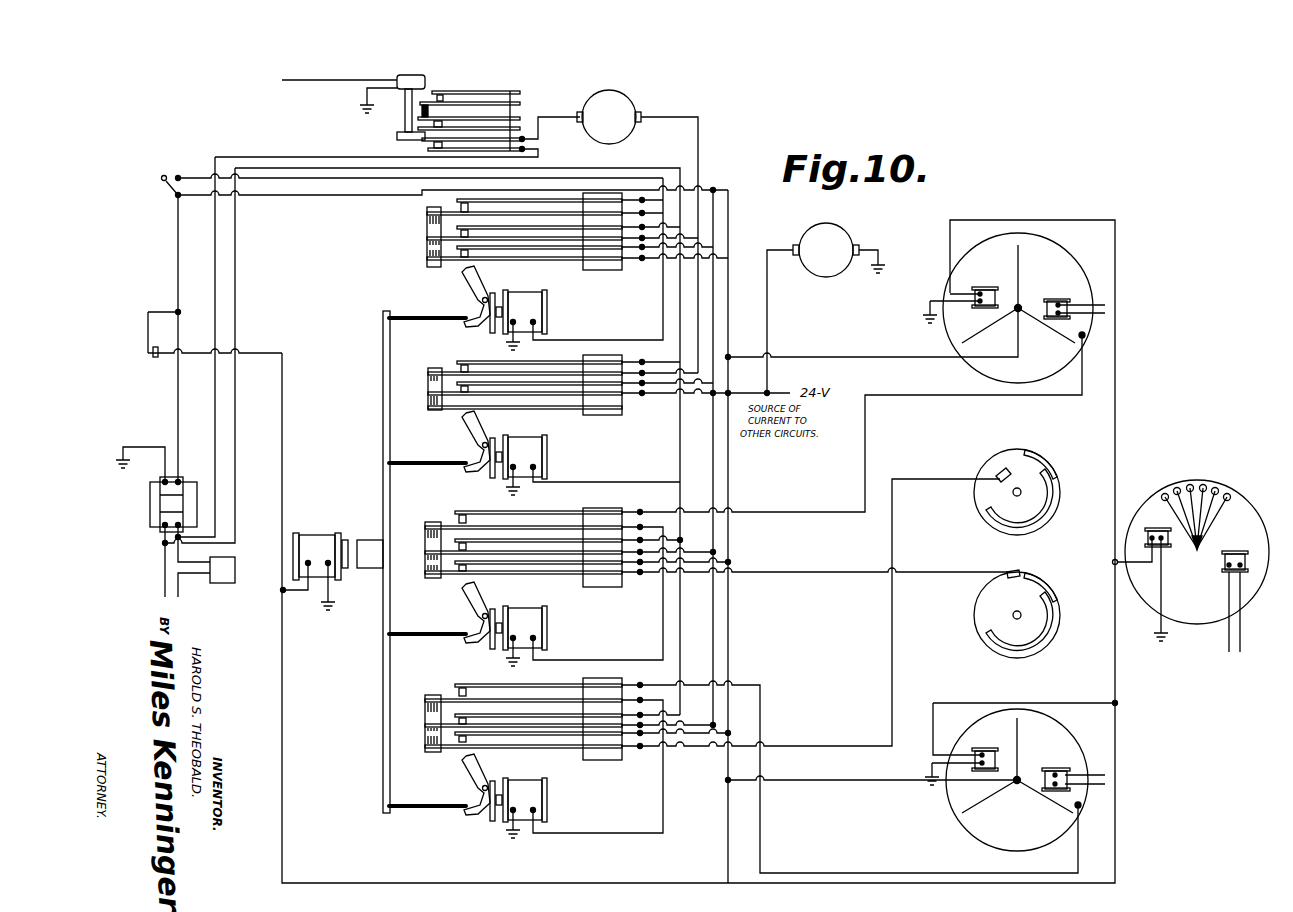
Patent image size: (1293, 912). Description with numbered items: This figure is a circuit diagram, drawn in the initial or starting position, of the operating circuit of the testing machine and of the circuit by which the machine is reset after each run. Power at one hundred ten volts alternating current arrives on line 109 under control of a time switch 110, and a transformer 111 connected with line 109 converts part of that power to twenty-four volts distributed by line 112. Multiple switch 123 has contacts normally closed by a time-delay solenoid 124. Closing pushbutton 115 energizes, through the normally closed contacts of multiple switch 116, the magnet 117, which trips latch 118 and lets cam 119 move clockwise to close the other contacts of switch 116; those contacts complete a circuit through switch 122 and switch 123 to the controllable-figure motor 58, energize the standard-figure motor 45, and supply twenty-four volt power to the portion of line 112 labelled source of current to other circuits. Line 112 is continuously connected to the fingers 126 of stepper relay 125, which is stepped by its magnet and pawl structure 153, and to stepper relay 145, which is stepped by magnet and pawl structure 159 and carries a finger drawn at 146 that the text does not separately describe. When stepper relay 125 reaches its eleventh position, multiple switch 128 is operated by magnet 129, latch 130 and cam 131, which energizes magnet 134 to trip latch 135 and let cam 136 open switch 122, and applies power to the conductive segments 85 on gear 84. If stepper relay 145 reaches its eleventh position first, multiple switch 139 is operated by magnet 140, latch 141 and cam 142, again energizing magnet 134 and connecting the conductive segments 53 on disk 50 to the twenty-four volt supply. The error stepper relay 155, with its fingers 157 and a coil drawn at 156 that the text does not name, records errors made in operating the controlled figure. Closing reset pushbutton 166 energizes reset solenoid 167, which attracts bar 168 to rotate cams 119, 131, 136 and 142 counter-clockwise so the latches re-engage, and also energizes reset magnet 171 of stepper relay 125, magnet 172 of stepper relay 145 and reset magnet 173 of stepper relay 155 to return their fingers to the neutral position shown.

The electric motor 45 is at (843, 234).
The disk 50 is at (979, 511).
The conductive layer 53 is at (1059, 481).
The electric motor 58 is at (604, 94).
The gear 84 is at (976, 603).
The conductive segments 85 is at (1036, 582).
The line 109 is at (289, 157).
The time switch 110 is at (222, 583).
The transformer 111 is at (150, 509).
The line 112 is at (287, 195).
The pushbutton 115 is at (168, 186).
The multiple switch 116 is at (619, 272).
The magnet 117 is at (526, 283).
The latch 118 is at (491, 333).
The cam 119 is at (467, 290).
The switch 122 is at (605, 415).
The multiple switch 123 is at (506, 93).
The time-delay solenoid 124 is at (404, 102).
The stepper relay 125 is at (1032, 252).
The contact finger 126 is at (1018, 291).
The multiple switch 128 is at (605, 587).
The magnet 129 is at (527, 597).
The latch 130 is at (491, 649).
The cam 131 is at (468, 608).
The magnet 134 is at (527, 427).
The latch 135 is at (491, 478).
The cam 136 is at (468, 438).
The multiple switch 139 is at (600, 762).
The magnet 140 is at (527, 770).
The latch 141 is at (491, 826).
The cam 142 is at (467, 780).
The stepper relay 145 is at (1070, 734).
The switch arm 146 is at (1019, 757).
The magnet and pawl structure 153 is at (1072, 295).
The stepper relay 155 is at (1239, 510).
The coil 156 is at (1228, 555).
The fingers 157 is at (1189, 556).
The magnet and pawl structure 159 is at (1065, 772).
The pushbutton 166 is at (148, 341).
The reset solenoid 167 is at (318, 538).
The bar 168 is at (377, 577).
The reset magnet 171 is at (984, 290).
The reset magnet 172 is at (984, 747).
The reset magnet 173 is at (1152, 528).